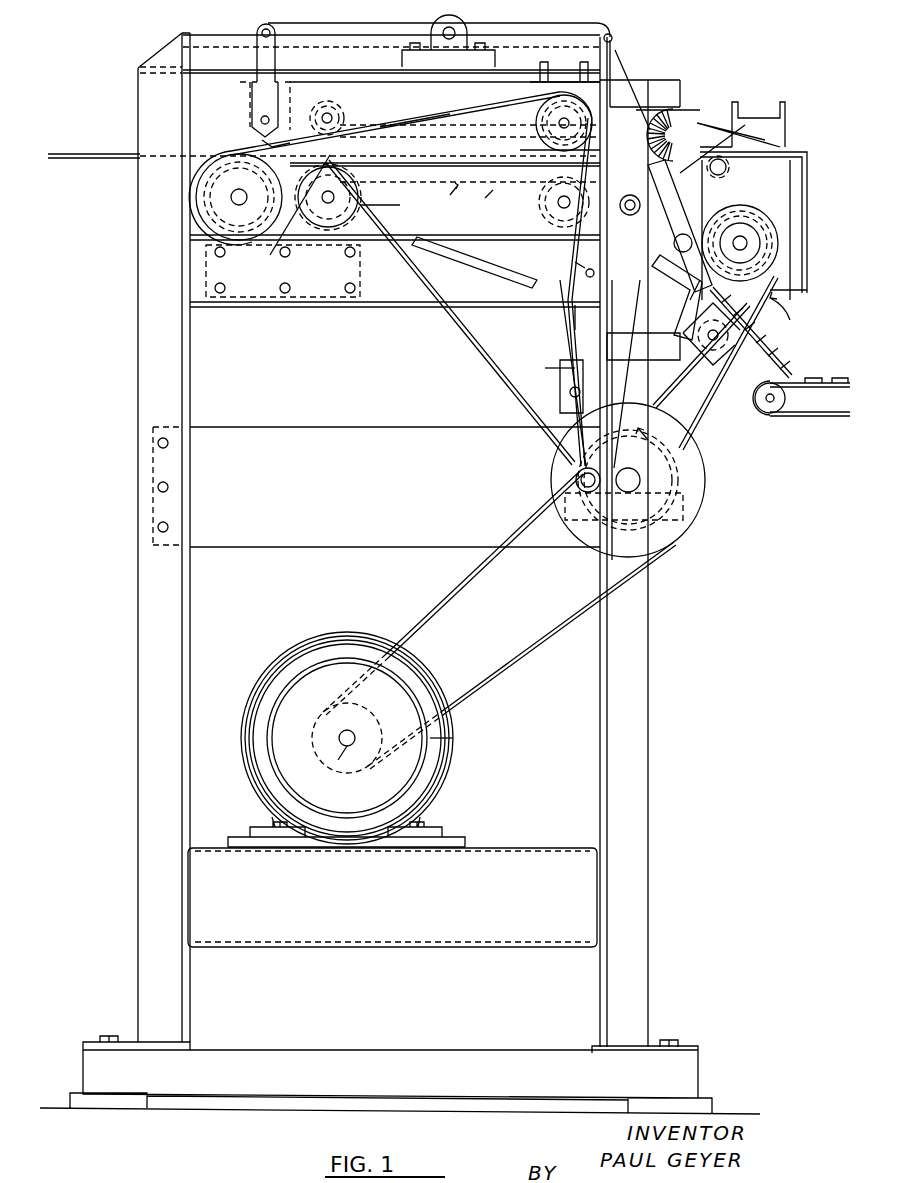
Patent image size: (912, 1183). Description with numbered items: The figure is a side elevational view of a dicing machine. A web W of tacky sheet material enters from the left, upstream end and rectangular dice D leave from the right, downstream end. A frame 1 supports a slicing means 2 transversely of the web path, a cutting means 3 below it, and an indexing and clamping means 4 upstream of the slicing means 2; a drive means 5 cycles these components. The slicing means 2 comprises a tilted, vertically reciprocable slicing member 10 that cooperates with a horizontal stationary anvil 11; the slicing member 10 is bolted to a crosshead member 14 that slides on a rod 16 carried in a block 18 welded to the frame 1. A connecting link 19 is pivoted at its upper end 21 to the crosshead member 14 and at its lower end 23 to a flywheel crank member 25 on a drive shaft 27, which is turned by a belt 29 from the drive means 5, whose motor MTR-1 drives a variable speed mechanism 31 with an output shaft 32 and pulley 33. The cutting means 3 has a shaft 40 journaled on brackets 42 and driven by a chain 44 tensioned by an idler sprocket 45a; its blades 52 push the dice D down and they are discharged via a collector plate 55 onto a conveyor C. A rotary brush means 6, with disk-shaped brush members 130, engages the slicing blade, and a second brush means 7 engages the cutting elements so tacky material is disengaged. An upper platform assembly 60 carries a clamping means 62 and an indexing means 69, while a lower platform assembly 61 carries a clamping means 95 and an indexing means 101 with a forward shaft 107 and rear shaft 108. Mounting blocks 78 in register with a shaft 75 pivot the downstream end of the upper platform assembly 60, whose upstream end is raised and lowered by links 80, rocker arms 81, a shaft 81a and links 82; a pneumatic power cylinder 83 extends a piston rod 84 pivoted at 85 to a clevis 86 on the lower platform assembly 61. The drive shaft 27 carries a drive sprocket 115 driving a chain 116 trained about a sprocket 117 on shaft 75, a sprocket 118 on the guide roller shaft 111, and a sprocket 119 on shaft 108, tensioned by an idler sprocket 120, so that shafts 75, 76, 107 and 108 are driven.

The frame 1 is at (664, 733).
The slicing means 2 is at (740, 130).
The cutting means 3 is at (789, 312).
The indexing and clamping means 4 is at (210, 76).
The drive means 5 is at (468, 723).
The rotary brush means 6 is at (727, 99).
The second brush means 7 is at (818, 197).
The slicing member 10 is at (680, 226).
The anvil 11 is at (648, 75).
The crosshead member 14 is at (677, 292).
The rod 16 is at (660, 92).
The block 18 is at (640, 60).
The connecting link 19 is at (620, 386).
The upper end pivot 21 is at (622, 210).
The lower end pivot 23 is at (576, 481).
The flywheel crank member 25 is at (705, 486).
The drive shaft 27 is at (640, 481).
The belt 29 is at (440, 595).
The variable speed mechanism 31 is at (382, 648).
The shaft 32 is at (338, 762).
The pulley 33 is at (372, 714).
The shaft 40 is at (750, 240).
The bracket 42 is at (691, 309).
The chain 44 is at (700, 407).
The idler sprocket 45a is at (701, 355).
The blade 52 is at (750, 243).
The collector plate 55 is at (755, 345).
The upper platform assembly 60 is at (252, 143).
The lower platform assembly 61 is at (472, 246).
The clamping means 62 is at (409, 122).
The indexing means 69 is at (450, 118).
The shaft 75 is at (556, 118).
The shaft 76 is at (335, 113).
The mounting block 78 is at (532, 92).
The link 80 is at (258, 98).
The rocker arm 81 is at (563, 32).
The shaft 81a is at (440, 24).
The link 82 is at (615, 75).
The pneumatic power cylinder 83 is at (568, 345).
The piston rod 84 is at (575, 318).
The pivot connection 85 is at (585, 273).
The clevis 86 is at (580, 262).
The clamping means 95 is at (456, 192).
The indexing means 101 is at (495, 198).
The forward shaft 107 is at (560, 204).
The rear shaft 108 is at (332, 210).
The shaft 111 is at (232, 197).
The drive sprocket 115 is at (634, 423).
The chain 116 is at (510, 392).
The sprocket 117 is at (545, 150).
The sprocket 118 is at (282, 248).
The sprocket 119 is at (365, 205).
The idler sprocket 120 is at (575, 360).
The brush member 130 is at (690, 100).
The conveyor C is at (786, 424).
The dice D is at (788, 358).
The web W is at (103, 151).
The motor MTR-1 is at (284, 664).